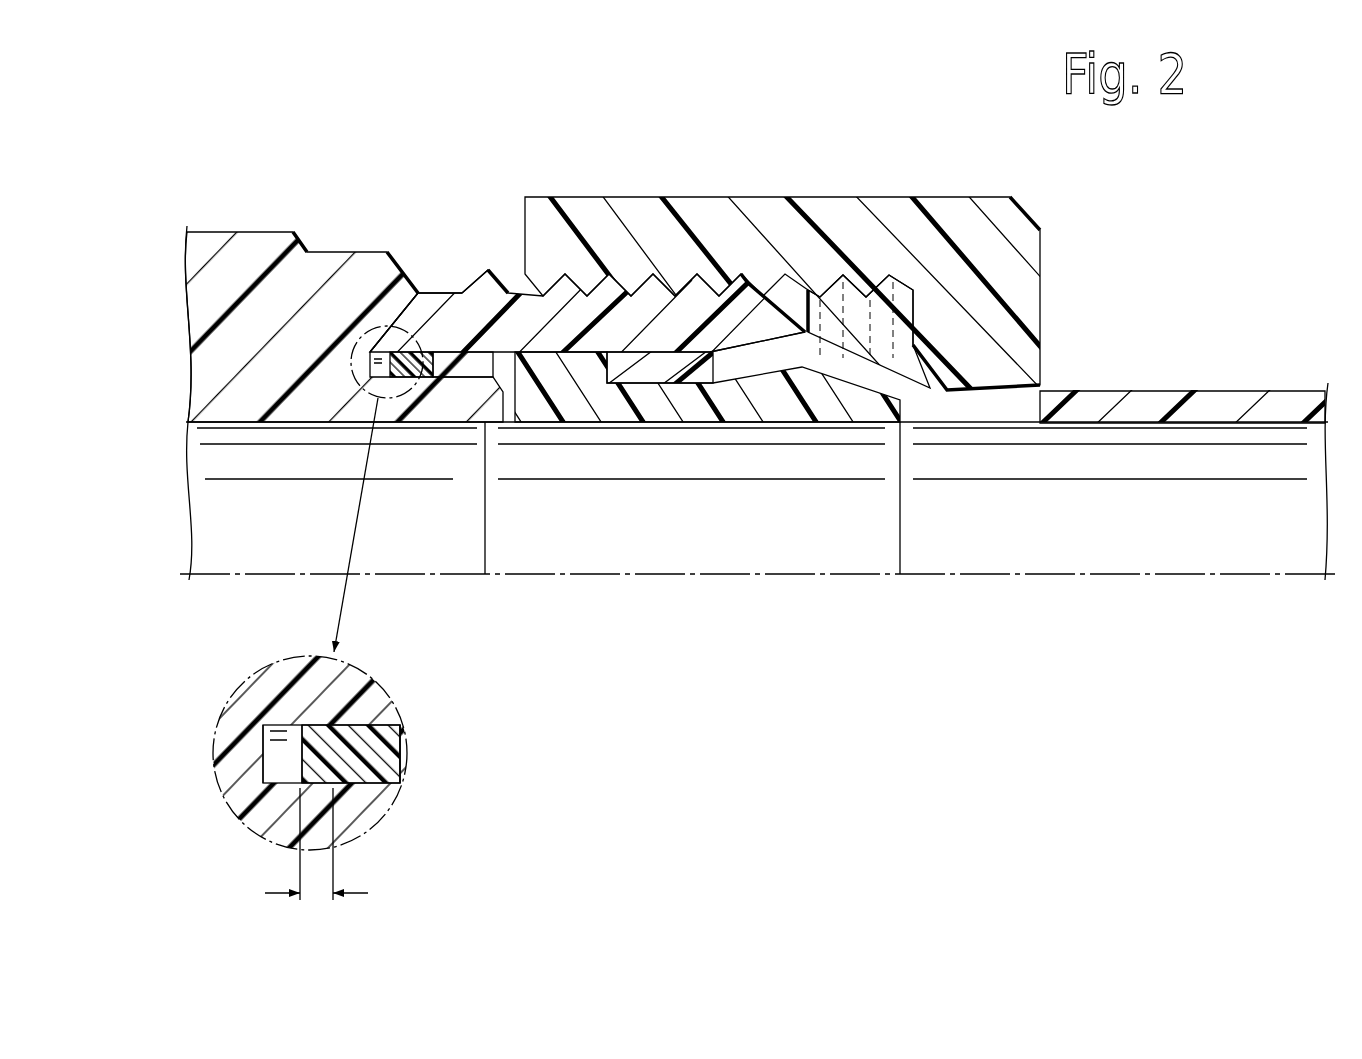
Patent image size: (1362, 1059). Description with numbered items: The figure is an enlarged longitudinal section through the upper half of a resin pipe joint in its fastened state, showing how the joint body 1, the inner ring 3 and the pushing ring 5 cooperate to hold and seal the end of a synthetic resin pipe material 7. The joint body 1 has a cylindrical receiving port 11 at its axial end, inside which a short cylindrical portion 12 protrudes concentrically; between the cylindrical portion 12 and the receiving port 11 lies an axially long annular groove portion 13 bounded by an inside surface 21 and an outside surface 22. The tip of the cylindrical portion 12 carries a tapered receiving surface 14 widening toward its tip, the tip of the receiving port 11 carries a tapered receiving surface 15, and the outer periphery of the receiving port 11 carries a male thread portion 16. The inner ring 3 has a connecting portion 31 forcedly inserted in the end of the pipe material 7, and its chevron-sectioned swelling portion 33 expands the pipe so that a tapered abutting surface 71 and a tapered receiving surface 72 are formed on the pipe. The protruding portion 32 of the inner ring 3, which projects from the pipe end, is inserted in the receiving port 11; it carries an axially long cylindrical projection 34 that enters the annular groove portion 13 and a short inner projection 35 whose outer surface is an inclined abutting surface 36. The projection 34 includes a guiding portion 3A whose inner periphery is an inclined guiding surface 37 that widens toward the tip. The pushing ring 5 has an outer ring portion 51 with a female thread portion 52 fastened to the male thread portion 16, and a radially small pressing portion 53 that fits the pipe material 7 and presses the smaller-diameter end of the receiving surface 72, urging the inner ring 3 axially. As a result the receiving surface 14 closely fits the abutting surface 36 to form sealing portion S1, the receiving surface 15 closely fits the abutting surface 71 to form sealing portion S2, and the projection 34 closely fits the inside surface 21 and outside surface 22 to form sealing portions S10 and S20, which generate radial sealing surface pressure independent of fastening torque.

The joint body 1 is at (220, 228).
The inner ring 3 is at (905, 526).
The guiding portion 3A is at (331, 831).
The pushing ring 5 is at (952, 196).
The pipe material 7 is at (1240, 390).
The receiving port 11 is at (692, 300).
The cylindrical portion 12 is at (428, 336).
The annular groove portion 13 is at (452, 348).
The receiving surface 14 is at (522, 402).
The receiving surface 15 is at (763, 297).
The male thread portion 16 is at (497, 268).
The inside surface 21 is at (397, 785).
The outside surface 22 is at (403, 742).
The connecting portion 31 is at (705, 415).
The protruding portion 32 is at (590, 414).
The swelling portion 33 is at (805, 372).
The cylindrical projection 34 is at (458, 360).
The inner projection 35 is at (500, 416).
The abutting surface 36 is at (485, 420).
The guiding surface 37 is at (268, 765).
The outer ring portion 51 is at (829, 282).
The female thread portion 52 is at (548, 282).
The pressing portion 53 is at (923, 375).
The abutting surface 71 is at (755, 345).
The receiving surface 72 is at (880, 300).
The sealing portion S1 is at (511, 402).
The sealing portion S2 is at (808, 320).
The sealing portion S10 is at (362, 795).
The sealing portion S20 is at (358, 719).